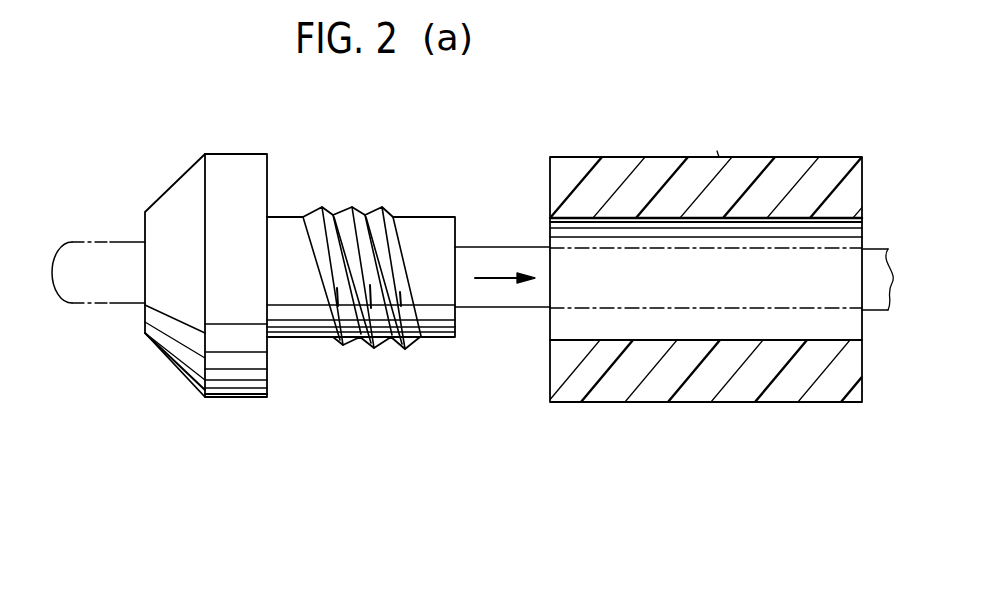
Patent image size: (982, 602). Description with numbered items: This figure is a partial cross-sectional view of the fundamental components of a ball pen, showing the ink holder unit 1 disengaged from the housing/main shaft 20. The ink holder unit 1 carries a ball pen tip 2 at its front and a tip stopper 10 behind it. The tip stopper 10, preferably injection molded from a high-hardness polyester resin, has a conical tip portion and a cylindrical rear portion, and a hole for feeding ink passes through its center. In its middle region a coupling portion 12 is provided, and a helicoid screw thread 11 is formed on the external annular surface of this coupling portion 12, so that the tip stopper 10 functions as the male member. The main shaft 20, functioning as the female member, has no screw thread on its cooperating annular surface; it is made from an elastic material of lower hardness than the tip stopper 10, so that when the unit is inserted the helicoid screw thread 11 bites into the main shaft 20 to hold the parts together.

The ink holder unit 1 is at (493, 310).
The ball pen tip 2 is at (118, 307).
The tip stopper 10 is at (243, 398).
The helicoid screw thread 11 is at (370, 346).
The coupling portion 12 is at (442, 215).
The housing/main shaft 20 is at (665, 402).